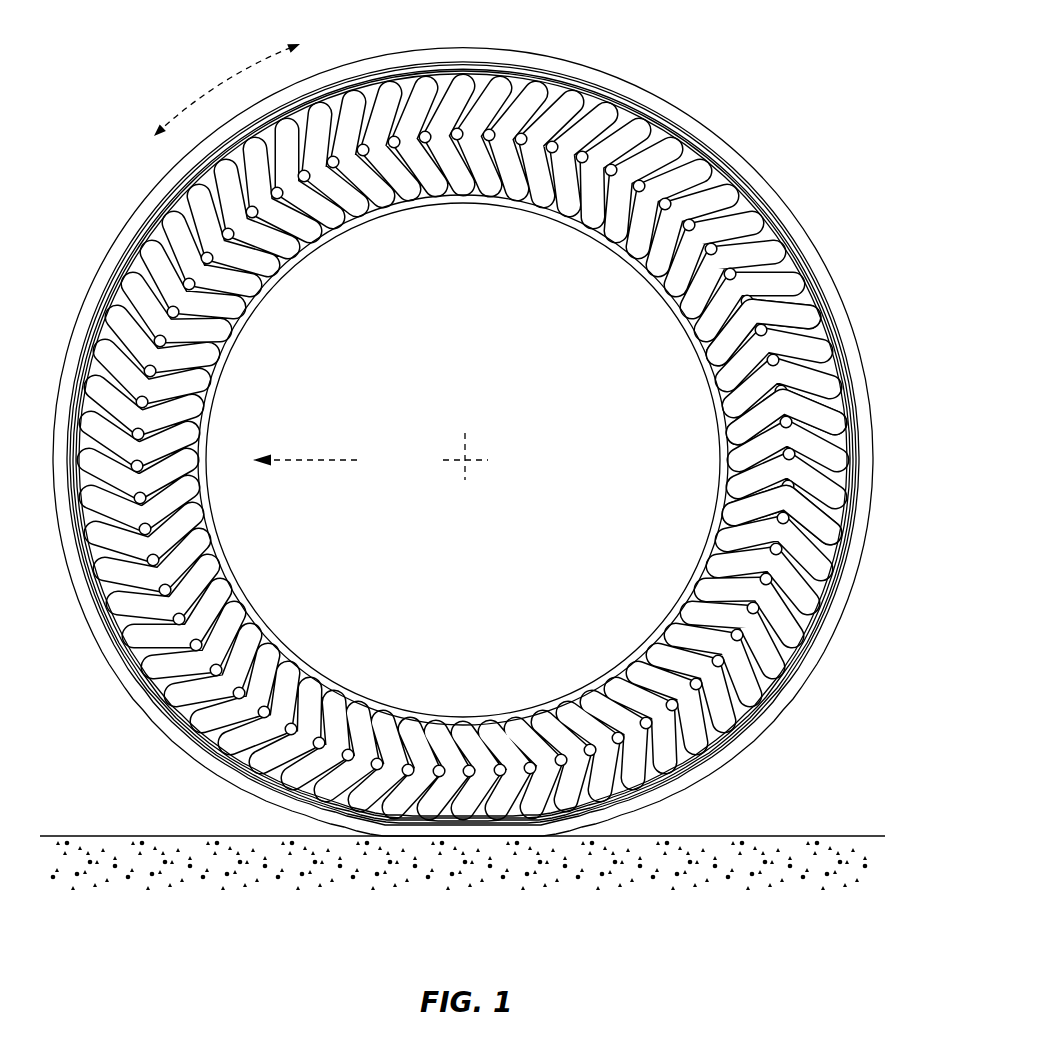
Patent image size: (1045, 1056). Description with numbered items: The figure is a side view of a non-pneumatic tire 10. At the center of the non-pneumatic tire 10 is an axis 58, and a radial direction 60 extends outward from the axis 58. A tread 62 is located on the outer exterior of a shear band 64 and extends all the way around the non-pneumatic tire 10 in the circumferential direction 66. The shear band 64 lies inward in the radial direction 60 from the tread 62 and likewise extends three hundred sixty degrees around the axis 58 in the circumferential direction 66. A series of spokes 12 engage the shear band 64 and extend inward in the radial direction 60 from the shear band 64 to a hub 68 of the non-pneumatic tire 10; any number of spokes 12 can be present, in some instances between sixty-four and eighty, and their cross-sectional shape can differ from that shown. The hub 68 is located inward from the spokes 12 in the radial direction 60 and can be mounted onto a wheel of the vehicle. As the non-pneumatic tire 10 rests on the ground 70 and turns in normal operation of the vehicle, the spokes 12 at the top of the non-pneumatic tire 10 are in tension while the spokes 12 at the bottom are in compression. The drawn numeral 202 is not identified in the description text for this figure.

The non-pneumatic tire 10 is at (779, 84).
The spokes 12 is at (763, 517).
The axis 58 is at (466, 462).
The radial direction 60 is at (308, 462).
The tread 62 is at (522, 52).
The shear band 64 is at (833, 311).
The circumferential direction 66 is at (227, 80).
The hub 68 is at (720, 367).
The ground 70 is at (160, 835).
The spoke outer end 202 is at (838, 417).